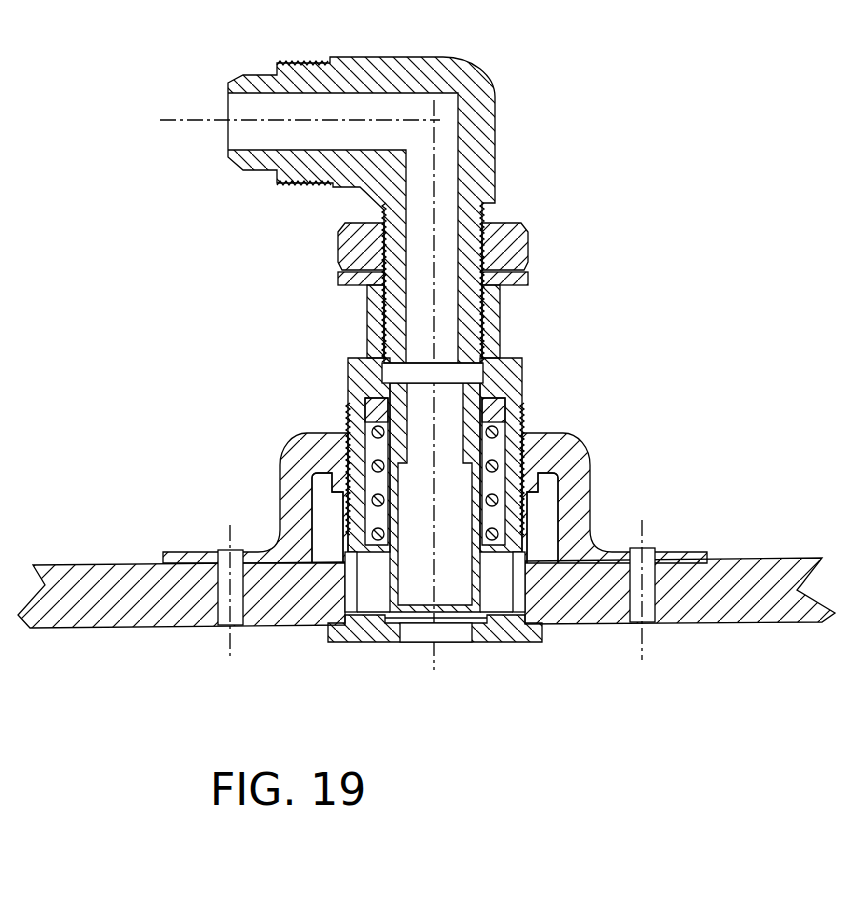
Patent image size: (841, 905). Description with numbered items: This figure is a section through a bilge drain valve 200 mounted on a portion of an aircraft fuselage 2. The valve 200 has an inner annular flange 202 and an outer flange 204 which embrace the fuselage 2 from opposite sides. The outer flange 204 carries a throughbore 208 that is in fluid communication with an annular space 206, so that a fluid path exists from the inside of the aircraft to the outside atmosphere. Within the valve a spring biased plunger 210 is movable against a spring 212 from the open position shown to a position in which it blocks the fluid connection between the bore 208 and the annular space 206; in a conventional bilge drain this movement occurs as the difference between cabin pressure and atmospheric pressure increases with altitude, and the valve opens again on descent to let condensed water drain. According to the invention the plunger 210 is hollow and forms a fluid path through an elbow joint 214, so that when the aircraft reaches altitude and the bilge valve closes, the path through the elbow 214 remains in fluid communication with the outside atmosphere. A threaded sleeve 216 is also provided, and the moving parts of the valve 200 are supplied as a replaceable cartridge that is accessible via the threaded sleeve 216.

The fuselage 2 is at (92, 624).
The valve 200 is at (600, 215).
The inner annular flange 202 is at (582, 482).
The outer flange 204 is at (522, 645).
The annular space 206 is at (320, 520).
The throughbore 208 is at (435, 645).
The plunger 210 is at (352, 450).
The spring 212 is at (520, 460).
The elbow joint 214 is at (482, 92).
The threaded sleeve 216 is at (497, 328).